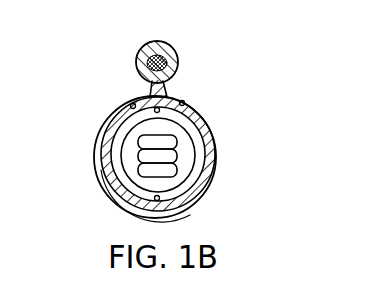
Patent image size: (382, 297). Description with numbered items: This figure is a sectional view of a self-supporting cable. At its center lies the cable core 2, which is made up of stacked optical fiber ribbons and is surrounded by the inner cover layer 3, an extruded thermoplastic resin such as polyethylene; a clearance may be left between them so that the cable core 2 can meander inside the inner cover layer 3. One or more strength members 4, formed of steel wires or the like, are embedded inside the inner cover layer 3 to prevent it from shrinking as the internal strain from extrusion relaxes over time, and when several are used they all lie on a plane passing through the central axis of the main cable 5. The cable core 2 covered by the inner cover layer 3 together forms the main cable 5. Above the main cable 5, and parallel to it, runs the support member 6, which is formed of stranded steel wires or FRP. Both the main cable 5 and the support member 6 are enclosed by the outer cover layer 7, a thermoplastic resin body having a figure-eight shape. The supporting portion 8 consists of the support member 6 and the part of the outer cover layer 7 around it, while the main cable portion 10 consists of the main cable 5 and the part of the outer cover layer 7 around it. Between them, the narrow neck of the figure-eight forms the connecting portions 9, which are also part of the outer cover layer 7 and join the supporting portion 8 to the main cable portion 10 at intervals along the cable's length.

The cable core 2 is at (178, 153).
The inner cover layer 3 is at (206, 108).
The strength members 4 is at (191, 101).
The main cable 5 is at (245, 47).
The support member 6 is at (171, 47).
The outer cover layer 7 is at (220, 188).
The supporting portion 8 is at (120, 63).
The connecting portions 9 is at (120, 89).
The main cable portion 10 is at (62, 100).